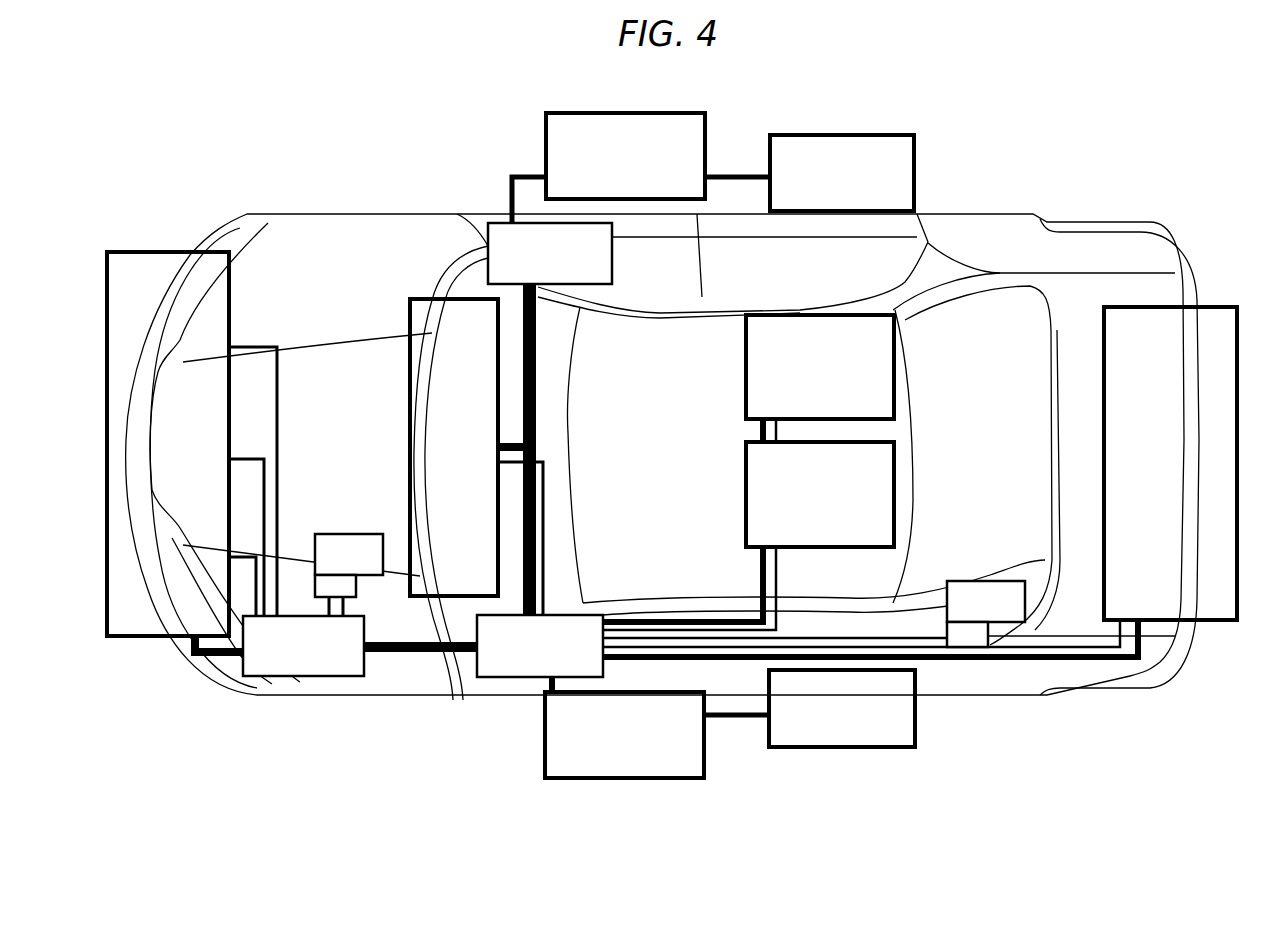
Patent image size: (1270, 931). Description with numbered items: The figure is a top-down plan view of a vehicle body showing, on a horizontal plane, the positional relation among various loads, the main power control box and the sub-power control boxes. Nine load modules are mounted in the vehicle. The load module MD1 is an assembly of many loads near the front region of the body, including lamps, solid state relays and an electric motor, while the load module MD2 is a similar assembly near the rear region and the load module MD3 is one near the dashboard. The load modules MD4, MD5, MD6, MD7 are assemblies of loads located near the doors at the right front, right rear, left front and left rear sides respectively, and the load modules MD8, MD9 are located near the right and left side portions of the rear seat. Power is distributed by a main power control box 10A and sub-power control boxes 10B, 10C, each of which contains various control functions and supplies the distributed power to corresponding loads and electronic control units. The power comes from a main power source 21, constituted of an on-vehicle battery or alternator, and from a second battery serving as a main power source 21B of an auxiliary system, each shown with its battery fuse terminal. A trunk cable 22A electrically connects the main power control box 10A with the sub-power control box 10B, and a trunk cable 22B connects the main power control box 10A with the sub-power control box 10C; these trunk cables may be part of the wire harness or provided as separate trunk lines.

The load module MD1 is at (135, 252).
The load module MD2 is at (1215, 307).
The load module MD3 is at (410, 396).
The load module MD4 is at (705, 143).
The load module MD5 is at (914, 181).
The load module MD6 is at (704, 762).
The load module MD7 is at (915, 720).
The load module MD8 is at (894, 331).
The load module MD9 is at (894, 493).
The main power control box 10A is at (520, 677).
The sub-power control box 10B is at (492, 223).
The sub-power control box 10C is at (278, 676).
The main power source 21 is at (380, 534).
The main power source of auxiliary system 21B is at (982, 581).
The trunk cable 22A is at (520, 340).
The trunk cable 22B is at (413, 660).